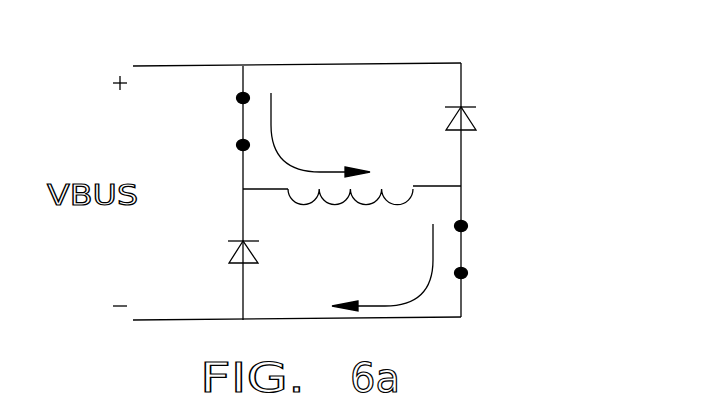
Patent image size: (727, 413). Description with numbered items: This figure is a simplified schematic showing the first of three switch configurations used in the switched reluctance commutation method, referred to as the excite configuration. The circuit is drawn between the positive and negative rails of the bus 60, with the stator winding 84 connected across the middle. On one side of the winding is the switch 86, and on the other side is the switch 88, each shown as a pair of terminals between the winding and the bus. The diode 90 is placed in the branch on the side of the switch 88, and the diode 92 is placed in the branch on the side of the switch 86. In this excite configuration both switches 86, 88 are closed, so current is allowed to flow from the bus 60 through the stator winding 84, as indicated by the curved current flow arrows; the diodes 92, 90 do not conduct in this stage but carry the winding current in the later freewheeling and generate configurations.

The bus 60 is at (155, 66).
The stator winding 84 is at (400, 204).
The switch 86 is at (243, 128).
The switch 88 is at (462, 252).
The diode 90 is at (472, 118).
The diode 92 is at (228, 252).